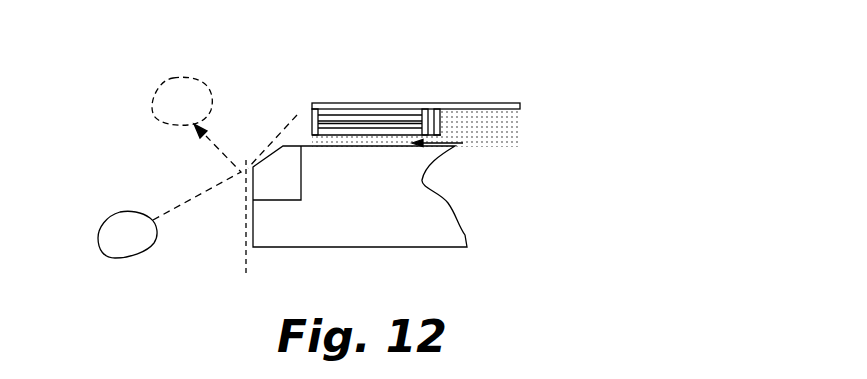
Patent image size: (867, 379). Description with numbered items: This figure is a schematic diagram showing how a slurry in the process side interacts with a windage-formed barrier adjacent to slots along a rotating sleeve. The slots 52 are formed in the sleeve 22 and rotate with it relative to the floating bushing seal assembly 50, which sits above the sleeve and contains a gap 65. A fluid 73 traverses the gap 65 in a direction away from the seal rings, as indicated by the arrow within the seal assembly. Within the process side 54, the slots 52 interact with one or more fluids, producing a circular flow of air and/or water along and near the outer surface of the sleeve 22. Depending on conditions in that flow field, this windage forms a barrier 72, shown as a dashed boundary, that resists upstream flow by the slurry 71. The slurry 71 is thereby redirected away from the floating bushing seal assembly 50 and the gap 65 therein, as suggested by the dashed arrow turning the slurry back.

The sleeve 22 is at (374, 196).
The floating bushing seal assembly 50 is at (402, 85).
The slots 52 is at (288, 188).
The process side 54 is at (68, 192).
The gap 65 is at (328, 133).
The slurry 71 is at (193, 114).
The barrier 72 is at (282, 125).
The fluid 73 is at (388, 143).